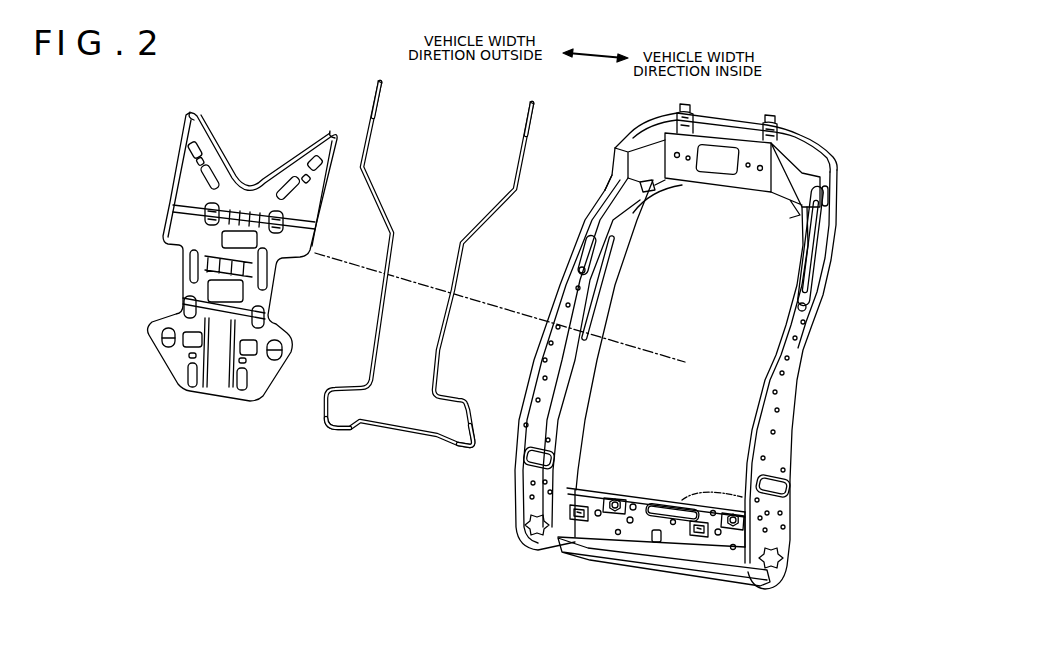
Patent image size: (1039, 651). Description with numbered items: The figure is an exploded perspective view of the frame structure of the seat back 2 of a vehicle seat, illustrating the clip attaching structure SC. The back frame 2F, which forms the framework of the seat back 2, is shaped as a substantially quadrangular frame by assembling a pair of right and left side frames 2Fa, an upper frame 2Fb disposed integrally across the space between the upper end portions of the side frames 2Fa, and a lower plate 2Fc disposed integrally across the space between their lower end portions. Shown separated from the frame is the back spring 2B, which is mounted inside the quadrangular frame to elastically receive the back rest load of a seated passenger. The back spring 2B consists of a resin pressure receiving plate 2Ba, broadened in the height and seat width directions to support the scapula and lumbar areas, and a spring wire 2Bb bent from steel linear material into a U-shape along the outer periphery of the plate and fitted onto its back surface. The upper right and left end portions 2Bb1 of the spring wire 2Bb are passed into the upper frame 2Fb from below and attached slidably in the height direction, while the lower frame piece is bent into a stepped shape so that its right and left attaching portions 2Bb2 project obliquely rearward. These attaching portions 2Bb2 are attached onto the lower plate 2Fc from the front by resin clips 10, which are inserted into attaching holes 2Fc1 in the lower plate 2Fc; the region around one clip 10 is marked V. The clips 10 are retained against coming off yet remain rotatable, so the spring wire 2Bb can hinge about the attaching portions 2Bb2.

The seat back 2 is at (157, 117).
The pressure receiving plate 2Ba is at (178, 193).
The back spring 2B is at (237, 83).
The spring wire 2Bb is at (382, 197).
The upper right and left end portions 2Bb1 is at (382, 102).
The attaching portions 2Bb2 is at (343, 433).
The back frame 2F is at (607, 187).
The side frames 2Fa is at (570, 318).
The upper frame 2Fb is at (718, 145).
The lower plate 2Fc is at (640, 523).
The attaching holes 2Fc1 is at (615, 499).
The clip attaching structure SC is at (601, 500).
The region V is at (688, 487).
The clip 10 is at (578, 519).